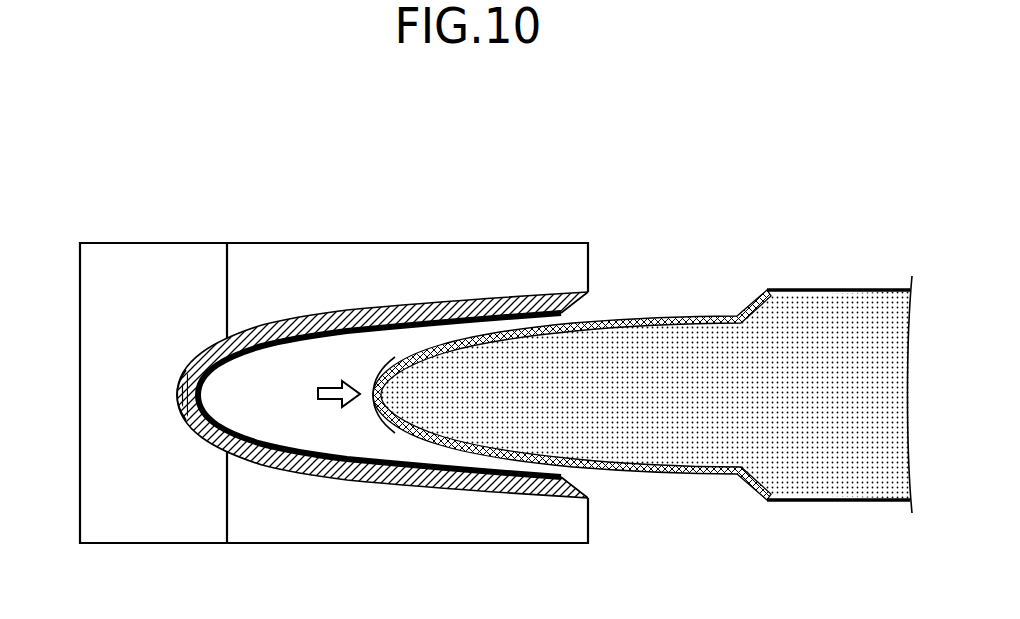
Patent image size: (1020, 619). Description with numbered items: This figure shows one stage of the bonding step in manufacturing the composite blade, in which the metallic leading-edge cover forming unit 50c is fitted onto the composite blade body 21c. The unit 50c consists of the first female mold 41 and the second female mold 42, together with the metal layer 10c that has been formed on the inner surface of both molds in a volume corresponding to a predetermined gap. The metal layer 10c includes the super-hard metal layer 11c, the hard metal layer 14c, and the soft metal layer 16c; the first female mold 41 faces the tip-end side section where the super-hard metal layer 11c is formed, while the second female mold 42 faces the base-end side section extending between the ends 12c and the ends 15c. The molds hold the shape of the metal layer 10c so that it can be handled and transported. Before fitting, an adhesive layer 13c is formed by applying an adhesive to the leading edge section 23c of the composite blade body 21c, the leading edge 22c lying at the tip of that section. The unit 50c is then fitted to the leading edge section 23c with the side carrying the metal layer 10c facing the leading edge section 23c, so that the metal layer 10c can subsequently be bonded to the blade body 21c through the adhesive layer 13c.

The metallic leading-edge cover forming unit 50c is at (477, 136).
The first female mold 41 is at (170, 252).
The second female mold 42 is at (320, 252).
The metal layer 10c is at (342, 393).
The super-hard metal layer 11c is at (180, 395).
The ends 12c is at (228, 338).
The hard metal layer 14c is at (372, 479).
The ends 15c is at (590, 290).
The soft metal layer 16c is at (284, 442).
The composite blade body 21c is at (638, 343).
The leading edge 22c is at (374, 382).
The adhesive layer 13c is at (671, 316).
The leading edge section 23c is at (692, 366).